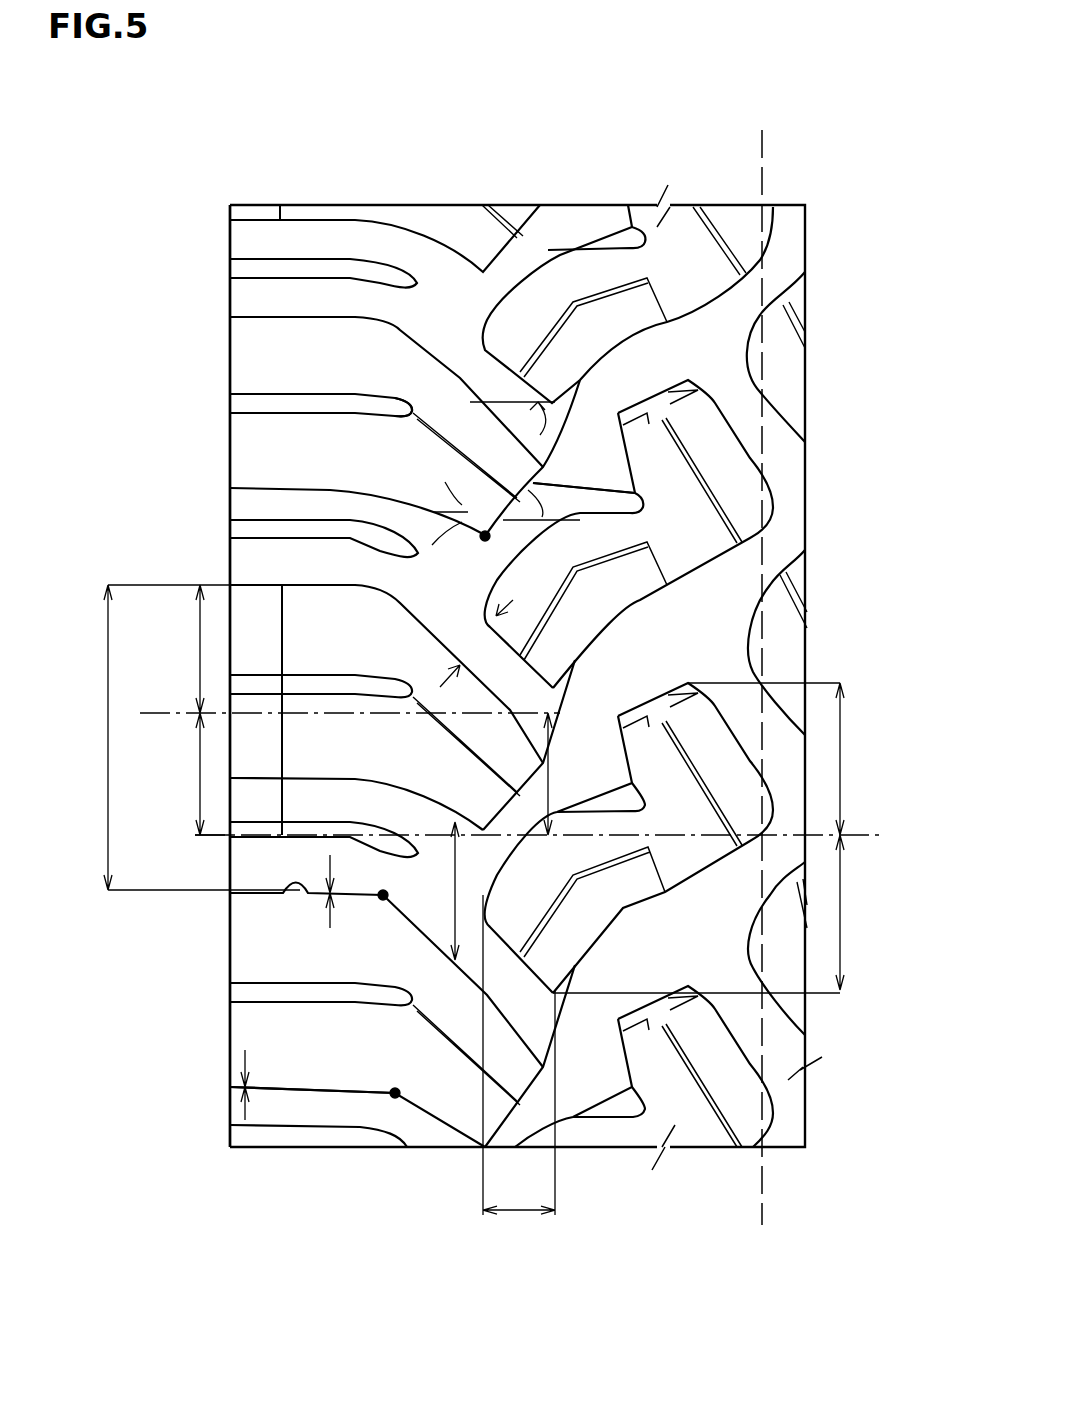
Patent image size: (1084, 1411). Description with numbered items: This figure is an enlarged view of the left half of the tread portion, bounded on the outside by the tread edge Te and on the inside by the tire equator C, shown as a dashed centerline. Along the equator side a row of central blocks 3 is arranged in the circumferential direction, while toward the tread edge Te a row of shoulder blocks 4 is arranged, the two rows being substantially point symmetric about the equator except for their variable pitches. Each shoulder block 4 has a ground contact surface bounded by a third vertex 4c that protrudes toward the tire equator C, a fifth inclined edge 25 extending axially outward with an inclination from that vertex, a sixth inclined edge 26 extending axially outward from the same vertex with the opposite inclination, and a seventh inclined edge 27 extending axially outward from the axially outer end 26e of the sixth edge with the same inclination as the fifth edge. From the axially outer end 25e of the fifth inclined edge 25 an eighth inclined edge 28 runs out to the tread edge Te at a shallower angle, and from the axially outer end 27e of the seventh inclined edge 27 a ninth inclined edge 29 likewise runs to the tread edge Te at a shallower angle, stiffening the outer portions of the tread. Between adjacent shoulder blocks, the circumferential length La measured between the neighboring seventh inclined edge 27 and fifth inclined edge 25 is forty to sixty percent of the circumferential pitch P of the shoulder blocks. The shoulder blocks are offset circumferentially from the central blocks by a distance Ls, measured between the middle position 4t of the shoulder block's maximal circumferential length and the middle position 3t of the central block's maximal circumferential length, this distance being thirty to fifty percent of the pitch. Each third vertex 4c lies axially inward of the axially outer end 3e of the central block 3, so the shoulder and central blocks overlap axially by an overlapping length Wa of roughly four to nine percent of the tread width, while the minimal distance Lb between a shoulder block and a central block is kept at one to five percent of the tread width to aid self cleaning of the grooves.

The central block 3 is at (680, 1000).
The axially outer end of the central block 3e is at (347, 1000).
The middle position of the maximal circumferential length of the central block 3t is at (880, 835).
The shoulder block 4 is at (287, 370).
The third vertex 4c is at (545, 432).
The middle position of the maximal circumferential length of the shoulder block 4t is at (148, 713).
The fifth inclined edge 25 is at (432, 352).
The axially outer end of the fifth inclined edge 25e is at (408, 990).
The sixth inclined edge 26 is at (620, 413).
The axially outer end of the sixth inclined edge 26e is at (488, 540).
The seventh inclined edge 27 is at (470, 510).
The axially outer end of the seventh inclined edge 27e is at (397, 1100).
The eighth inclined edge 28 is at (285, 893).
The ninth inclined edge 29 is at (280, 1090).
The tire equator C is at (759, 664).
The tread edge Te is at (230, 333).
The circumferential pitch P is at (197, 737).
The overlapping length Wa is at (519, 1055).
The circumferential length La is at (396, 1098).
The minimal distance Lb is at (540, 745).
The distance Ls is at (550, 775).